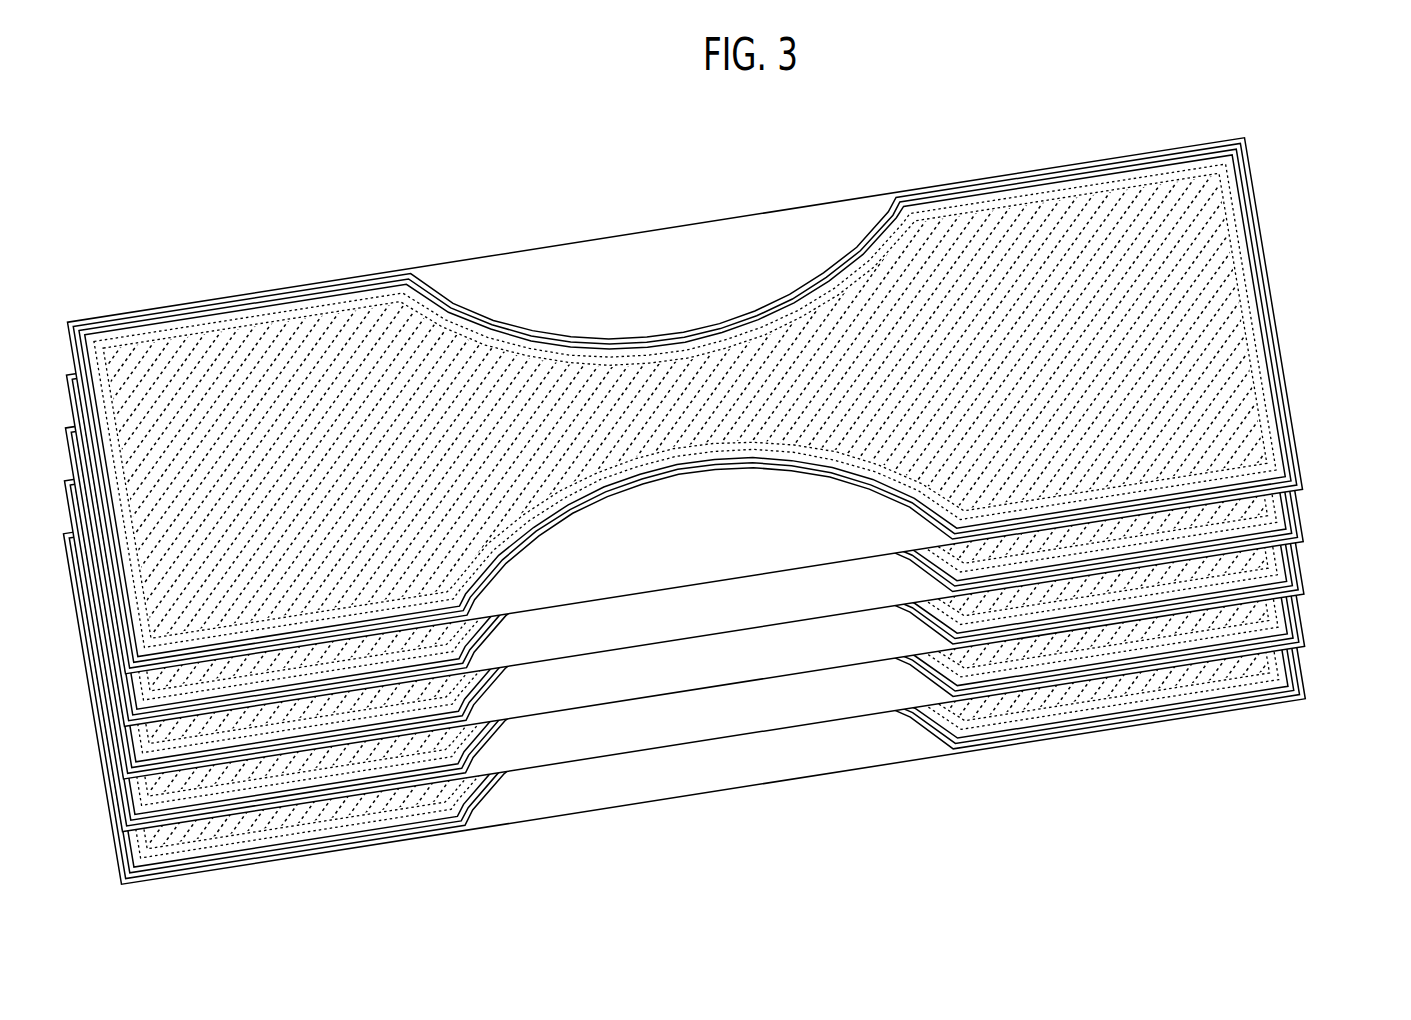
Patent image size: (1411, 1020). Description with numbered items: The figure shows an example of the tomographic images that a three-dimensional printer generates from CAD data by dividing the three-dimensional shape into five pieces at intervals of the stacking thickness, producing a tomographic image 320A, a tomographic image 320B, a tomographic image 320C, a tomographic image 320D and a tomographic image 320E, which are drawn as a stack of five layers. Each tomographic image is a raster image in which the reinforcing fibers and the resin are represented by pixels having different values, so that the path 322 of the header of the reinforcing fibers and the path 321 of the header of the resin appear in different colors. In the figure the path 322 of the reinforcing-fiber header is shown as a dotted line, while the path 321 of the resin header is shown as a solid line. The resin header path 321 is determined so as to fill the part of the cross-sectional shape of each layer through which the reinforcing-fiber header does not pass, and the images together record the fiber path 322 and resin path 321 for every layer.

The tomographic image 320A is at (1298, 670).
The tomographic image 320B is at (1298, 618).
The tomographic image 320C is at (1298, 566).
The tomographic image 320D is at (1298, 515).
The tomographic image 320E is at (705, 405).
The path of the header of the resin 321 is at (232, 303).
The path of the header of the reinforcing fibers 322 is at (359, 303).